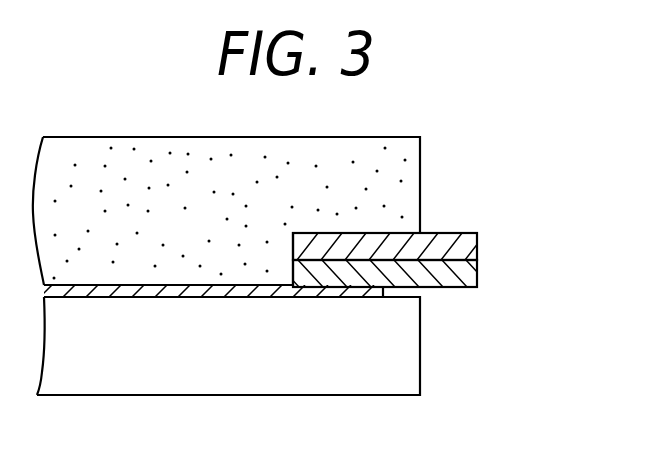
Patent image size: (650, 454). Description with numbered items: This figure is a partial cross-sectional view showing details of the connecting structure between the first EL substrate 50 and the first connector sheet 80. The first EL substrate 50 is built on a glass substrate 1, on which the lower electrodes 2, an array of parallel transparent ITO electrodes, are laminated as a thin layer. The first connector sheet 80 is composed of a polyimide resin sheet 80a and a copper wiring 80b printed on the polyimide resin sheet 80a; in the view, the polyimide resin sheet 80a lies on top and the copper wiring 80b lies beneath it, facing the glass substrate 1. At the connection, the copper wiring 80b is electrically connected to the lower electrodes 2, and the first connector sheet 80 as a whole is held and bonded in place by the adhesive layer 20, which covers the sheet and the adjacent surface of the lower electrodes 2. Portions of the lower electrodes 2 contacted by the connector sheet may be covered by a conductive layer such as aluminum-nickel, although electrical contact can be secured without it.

The glass substrate 1 is at (370, 355).
The lower electrodes 2 is at (348, 290).
The adhesive layer 20 is at (373, 190).
The first EL substrate 50 is at (392, 397).
The first connector sheet 80 is at (442, 264).
The polyimide resin sheet 80a is at (433, 247).
The copper wiring 80b is at (447, 275).